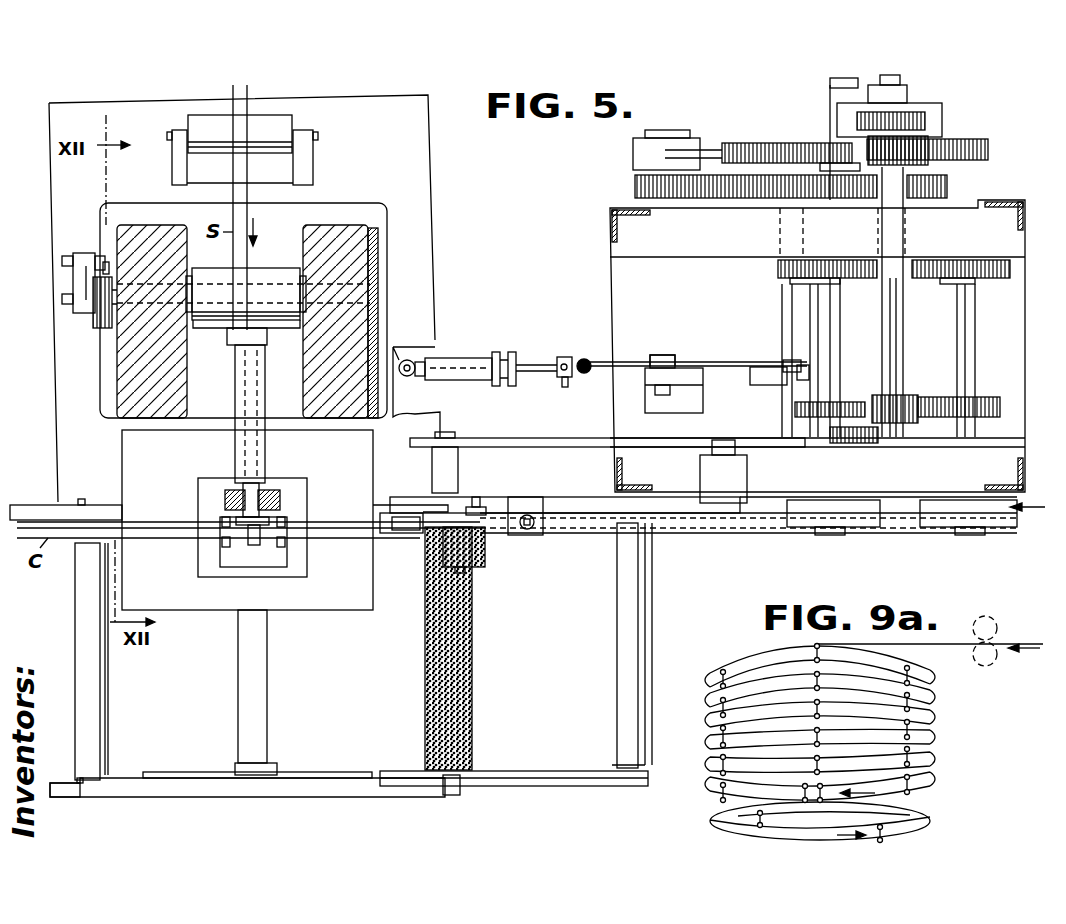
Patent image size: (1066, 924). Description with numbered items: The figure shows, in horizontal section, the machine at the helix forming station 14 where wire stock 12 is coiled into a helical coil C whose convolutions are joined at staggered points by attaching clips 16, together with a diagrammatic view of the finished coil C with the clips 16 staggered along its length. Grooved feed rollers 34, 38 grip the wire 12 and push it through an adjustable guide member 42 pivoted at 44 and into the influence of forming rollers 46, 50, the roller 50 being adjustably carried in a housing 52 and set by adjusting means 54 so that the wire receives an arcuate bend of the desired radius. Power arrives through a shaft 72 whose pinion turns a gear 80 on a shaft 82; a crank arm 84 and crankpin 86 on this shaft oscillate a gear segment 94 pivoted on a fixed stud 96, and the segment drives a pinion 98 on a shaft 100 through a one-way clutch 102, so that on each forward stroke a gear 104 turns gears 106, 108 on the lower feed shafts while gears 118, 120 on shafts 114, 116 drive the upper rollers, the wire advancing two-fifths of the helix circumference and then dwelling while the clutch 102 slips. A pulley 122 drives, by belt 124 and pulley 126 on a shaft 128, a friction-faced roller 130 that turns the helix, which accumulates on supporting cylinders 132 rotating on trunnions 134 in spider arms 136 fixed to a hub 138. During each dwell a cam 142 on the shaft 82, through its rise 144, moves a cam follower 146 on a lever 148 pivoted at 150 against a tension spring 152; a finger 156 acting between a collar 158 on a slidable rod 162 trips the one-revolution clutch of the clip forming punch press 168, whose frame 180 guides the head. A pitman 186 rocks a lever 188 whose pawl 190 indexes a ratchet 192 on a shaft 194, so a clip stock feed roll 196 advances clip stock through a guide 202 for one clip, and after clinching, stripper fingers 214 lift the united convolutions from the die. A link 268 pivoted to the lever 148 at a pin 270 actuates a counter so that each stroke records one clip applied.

In FIG. 5, the rod or wire stock 12 is at (1031, 516).
In FIG. 9a, the rod or wire stock 12 is at (1015, 643).
In FIG. 5, the helix forming station 14 is at (220, 628).
In FIG. 5, the attaching clip 16 is at (258, 547).
In FIG. 9a, the attaching clip 16 is at (814, 650).
In FIG. 5, the grooved feed roller 34 is at (935, 528).
In FIG. 5, the grooved feed roller 38 is at (800, 528).
In FIG. 5, the adjustable guide member 42 is at (584, 515).
In FIG. 5, the pivot 44 is at (748, 472).
In FIG. 5, the forming roller 46 is at (456, 513).
In FIG. 5, the forming roller 50 is at (417, 520).
In FIG. 5, the housing 52 is at (428, 505).
In FIG. 5, the adjusting means 54 is at (492, 500).
In FIG. 5, the shaft 72 is at (830, 87).
In FIG. 5, the gear 80 is at (948, 188).
In FIG. 5, the shaft 82 is at (782, 323).
In FIG. 5, the crank arm 84 is at (815, 150).
In FIG. 5, the crankpin 86 is at (835, 165).
In FIG. 5, the gear segment 94 is at (990, 153).
In FIG. 5, the fixed stud 96 is at (670, 138).
In FIG. 5, the pinion 98 is at (930, 146).
In FIG. 5, the shaft 100 is at (905, 312).
In FIG. 5, the one-way clutch 102 is at (912, 105).
In FIG. 5, the gear 104 is at (905, 400).
In FIG. 5, the gear 106 is at (990, 397).
In FIG. 5, the gear 108 is at (795, 418).
In FIG. 5, the shaft 114 is at (972, 313).
In FIG. 5, the shaft 116 is at (810, 302).
In FIG. 5, the gear 118 is at (966, 281).
In FIG. 5, the gear 120 is at (778, 274).
In FIG. 5, the pulley 122 is at (852, 444).
In FIG. 5, the belt 124 is at (560, 438).
In FIG. 5, the pulley 126 is at (462, 437).
In FIG. 5, the shaft 128 is at (432, 468).
In FIG. 5, the roller 130 is at (475, 697).
In FIG. 5, the supporting cylinder 132 is at (102, 708).
In FIG. 5, the trunnion 134 is at (82, 792).
In FIG. 5, the spider arm 136 is at (228, 793).
In FIG. 5, the hub 138 is at (262, 733).
In FIG. 5, the cam 142 is at (770, 385).
In FIG. 5, the cam rise 144 is at (785, 362).
In FIG. 5, the cam follower 146 is at (809, 373).
In FIG. 5, the lever 148 is at (645, 362).
In FIG. 5, the pivot 150 is at (664, 355).
In FIG. 5, the tension spring 152 is at (586, 358).
In FIG. 5, the manually retractable finger 156 is at (447, 358).
In FIG. 5, the collar 158 is at (410, 360).
In FIG. 5, the vertically slidable rod 162 is at (420, 360).
In FIG. 5, the clip forming punch press 168 is at (332, 207).
In FIG. 5, the frame 180 is at (148, 232).
In FIG. 5, the pitman 186 is at (62, 260).
In FIG. 5, the lever 188 is at (73, 279).
In FIG. 5, the pawl 190 is at (100, 256).
In FIG. 5, the ratchet 192 is at (98, 305).
In FIG. 5, the shaft 194 is at (62, 300).
In FIG. 5, the clip stock feed roll 196 is at (272, 276).
In FIG. 5, the guide 202 is at (234, 454).
In FIG. 5, the stripper fingers 214 is at (222, 542).
In FIG. 5, the link 268 is at (560, 357).
In FIG. 5, the pin 270 is at (562, 385).
In FIG. 9a, the helical coil C is at (934, 767).